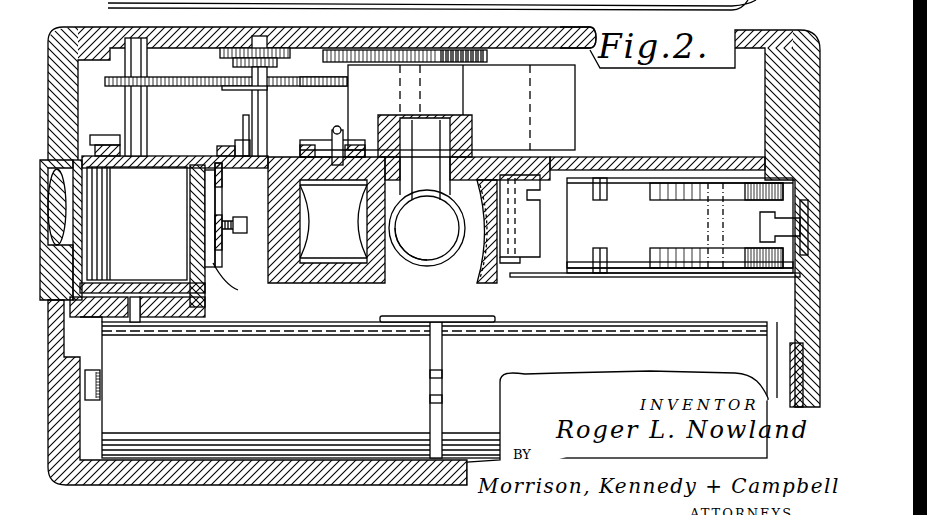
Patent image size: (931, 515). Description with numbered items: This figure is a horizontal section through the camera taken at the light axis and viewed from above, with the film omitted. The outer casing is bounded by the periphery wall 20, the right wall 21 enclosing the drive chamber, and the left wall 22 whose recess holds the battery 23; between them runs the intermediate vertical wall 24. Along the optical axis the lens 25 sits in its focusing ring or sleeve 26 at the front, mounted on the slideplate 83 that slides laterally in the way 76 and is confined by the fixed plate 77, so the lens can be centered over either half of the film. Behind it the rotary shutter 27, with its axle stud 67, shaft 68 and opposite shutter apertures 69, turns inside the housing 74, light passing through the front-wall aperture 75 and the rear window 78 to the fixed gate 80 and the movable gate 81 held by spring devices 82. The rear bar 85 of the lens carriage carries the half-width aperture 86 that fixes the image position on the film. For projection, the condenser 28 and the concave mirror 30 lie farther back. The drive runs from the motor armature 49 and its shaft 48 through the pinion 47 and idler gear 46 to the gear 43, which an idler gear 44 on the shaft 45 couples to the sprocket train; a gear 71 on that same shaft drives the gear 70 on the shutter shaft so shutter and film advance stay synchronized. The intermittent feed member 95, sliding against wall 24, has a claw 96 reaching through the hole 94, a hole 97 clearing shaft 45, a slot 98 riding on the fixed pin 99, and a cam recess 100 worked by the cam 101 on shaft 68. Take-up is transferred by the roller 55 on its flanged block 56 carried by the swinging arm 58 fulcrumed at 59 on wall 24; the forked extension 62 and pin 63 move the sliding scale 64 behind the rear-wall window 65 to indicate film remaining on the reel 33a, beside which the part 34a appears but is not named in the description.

The periphery wall 20 is at (68, 26).
The right wall 21 is at (588, 50).
The left wall 22 is at (303, 487).
The battery 23 is at (439, 387).
The intermediate vertical wall 24 is at (662, 157).
The lens 25 is at (62, 208).
The ring or sleeve 26 is at (80, 128).
The shutter 27 is at (172, 323).
The condenser or lens system 28 is at (326, 220).
The concave mirror 30 is at (480, 278).
The film reel 33a is at (631, 270).
The upper plate 34a is at (558, 277).
The gear 43 is at (257, 36).
The idler gear 44 is at (243, 62).
The shaft 45 is at (268, 98).
The idler gear 46 is at (326, 77).
The pinion 47 is at (488, 62).
The shaft 48 is at (461, 165).
The armature 49 is at (533, 105).
The roller 55 is at (665, 200).
The flanged block 56 is at (733, 203).
The carrier or arm 58 is at (680, 225).
The fulcrum 59 is at (541, 222).
The extension 62 is at (768, 244).
The projection 63 is at (792, 258).
The sliding scale 64 is at (796, 300).
The rear wall window 65 is at (768, 148).
The axle stud 67 is at (144, 349).
The shaft 68 is at (150, 118).
The shutter apertures 69 is at (88, 199).
The gear 70 is at (156, 77).
The gear 71 is at (226, 89).
The housing 74 is at (118, 322).
The aperture 75 is at (74, 260).
The recess or way 76 is at (122, 323).
The fixed plate 77 is at (53, 110).
The aperture or window 78 is at (193, 240).
The fixed gate 80 is at (232, 282).
The movable gate 81 is at (223, 263).
The spring devices 82 is at (241, 234).
The slideplate 83 is at (80, 265).
The rear bar 85 is at (200, 230).
The aperture or window 86 is at (223, 200).
The hole 94 is at (226, 146).
The feed member 95 is at (305, 148).
The claw extension 96 is at (238, 182).
The hole 97 is at (246, 136).
The slot 98 is at (330, 140).
The fixed pin 99 is at (338, 126).
The cam recess 100 is at (150, 142).
The cam 101 is at (118, 140).